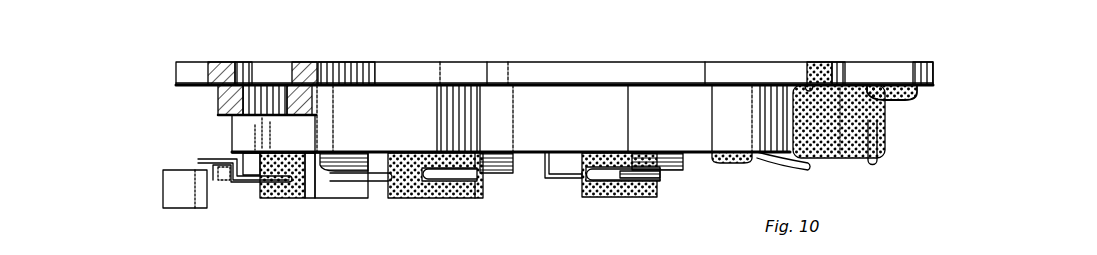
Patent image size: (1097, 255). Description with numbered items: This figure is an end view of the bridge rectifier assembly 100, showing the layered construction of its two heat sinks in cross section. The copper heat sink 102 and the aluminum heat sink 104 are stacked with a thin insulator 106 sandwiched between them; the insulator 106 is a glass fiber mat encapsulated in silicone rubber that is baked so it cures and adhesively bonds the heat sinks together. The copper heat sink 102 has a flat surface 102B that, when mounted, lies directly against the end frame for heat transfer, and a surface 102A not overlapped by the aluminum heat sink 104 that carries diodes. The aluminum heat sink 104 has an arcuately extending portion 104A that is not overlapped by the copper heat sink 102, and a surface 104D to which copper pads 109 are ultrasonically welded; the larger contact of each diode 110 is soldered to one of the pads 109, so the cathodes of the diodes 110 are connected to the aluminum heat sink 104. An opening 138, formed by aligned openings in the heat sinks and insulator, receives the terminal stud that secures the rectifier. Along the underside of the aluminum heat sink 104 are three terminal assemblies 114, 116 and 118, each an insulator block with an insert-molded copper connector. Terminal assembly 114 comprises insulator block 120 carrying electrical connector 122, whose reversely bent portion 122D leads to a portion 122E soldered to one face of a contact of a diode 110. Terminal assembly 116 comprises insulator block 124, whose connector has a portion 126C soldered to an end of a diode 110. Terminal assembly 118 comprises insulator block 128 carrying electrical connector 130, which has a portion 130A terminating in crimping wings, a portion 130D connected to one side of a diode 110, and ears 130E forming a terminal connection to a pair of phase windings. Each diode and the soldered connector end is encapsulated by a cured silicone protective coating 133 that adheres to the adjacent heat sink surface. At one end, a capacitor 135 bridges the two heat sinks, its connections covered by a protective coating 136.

The bridge rectifier assembly 100 is at (214, 100).
The copper heat sink 102 is at (478, 75).
The surface of copper heat sink 102A is at (806, 89).
The flat surface of copper heat sink 102B is at (371, 62).
The aluminum heat sink 104 is at (580, 98).
The arcuately extending portion 104A is at (529, 160).
The surface of aluminum heat sink 104D is at (697, 155).
The thin insulator 106 is at (551, 84).
The copper pads 109 is at (343, 152).
The diodes 110 is at (365, 150).
The terminal assembly 114 is at (676, 190).
The terminal assembly 116 is at (436, 205).
The terminal assembly 118 is at (302, 200).
The insulator block 120 is at (613, 198).
The electrical connector 122 is at (567, 176).
The reversely bent portion 122D is at (623, 186).
The connector portion 122E is at (638, 192).
The insulator block 124 is at (415, 200).
The connector portion 126C is at (470, 182).
The insulator block 128 is at (297, 200).
The electrical connector 130 is at (213, 152).
The connector portion 130A is at (233, 158).
The connector portion 130D is at (430, 118).
The ears 130E is at (205, 187).
The protective coating 133 is at (335, 197).
The capacitor 135 is at (855, 133).
The protective coating 136 is at (897, 86).
The opening 138 is at (291, 74).